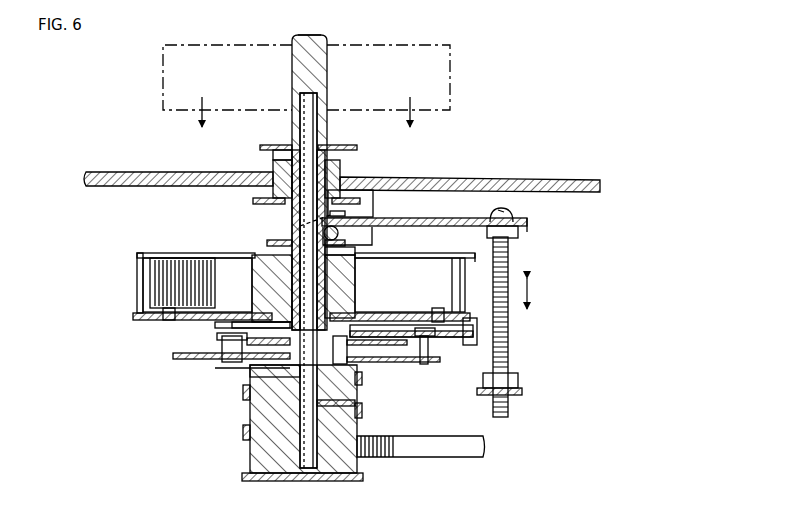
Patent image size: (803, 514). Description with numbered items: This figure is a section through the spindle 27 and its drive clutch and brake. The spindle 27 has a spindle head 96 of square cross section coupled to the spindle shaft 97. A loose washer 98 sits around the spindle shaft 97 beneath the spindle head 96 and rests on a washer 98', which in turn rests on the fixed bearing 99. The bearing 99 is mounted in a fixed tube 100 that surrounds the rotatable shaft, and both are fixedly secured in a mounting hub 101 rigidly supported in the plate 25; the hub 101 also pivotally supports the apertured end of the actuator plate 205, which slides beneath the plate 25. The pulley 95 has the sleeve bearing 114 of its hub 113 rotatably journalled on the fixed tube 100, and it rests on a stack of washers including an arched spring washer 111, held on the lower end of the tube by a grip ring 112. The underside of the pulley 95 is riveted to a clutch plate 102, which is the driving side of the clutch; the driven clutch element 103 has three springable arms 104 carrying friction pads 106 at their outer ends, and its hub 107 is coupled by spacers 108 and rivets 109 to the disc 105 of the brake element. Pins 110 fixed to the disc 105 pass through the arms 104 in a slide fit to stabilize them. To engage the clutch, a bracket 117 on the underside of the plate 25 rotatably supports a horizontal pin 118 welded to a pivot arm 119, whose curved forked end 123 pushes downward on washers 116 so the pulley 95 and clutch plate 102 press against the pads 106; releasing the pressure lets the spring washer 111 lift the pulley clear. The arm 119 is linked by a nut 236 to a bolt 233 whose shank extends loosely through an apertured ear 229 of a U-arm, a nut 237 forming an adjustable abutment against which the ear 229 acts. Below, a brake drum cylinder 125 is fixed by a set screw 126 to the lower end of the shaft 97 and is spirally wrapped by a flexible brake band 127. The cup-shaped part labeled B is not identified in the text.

The spindle 27 is at (314, 35).
The spindle head 96 is at (297, 73).
The spindle shaft 97 is at (322, 137).
The loose washer 98 is at (355, 154).
The washer 98' is at (272, 134).
The fixed bearing 99 is at (289, 151).
The mounting hub 101 is at (283, 181).
The plate 25 is at (470, 178).
The actuator plate 205 is at (252, 205).
The bracket 117 is at (362, 195).
The fixed tube 100 is at (297, 221).
The downwardly curved end portion 123 is at (296, 232).
The washers 116 is at (280, 239).
The pivot arm 119 is at (453, 221).
The horizontal pin 118 is at (338, 232).
The sleeve bearing 114 is at (355, 255).
The hub 113 is at (256, 282).
The brush assembly B is at (150, 280).
The clutch plate 102 is at (150, 320).
The rivets 109 is at (238, 326).
The pulley 95 is at (418, 285).
The spring washer 111 is at (355, 318).
The friction pads 106 is at (205, 321).
The springable arms 104 is at (230, 346).
The hub 107 is at (250, 356).
The spacers 108 is at (215, 358).
The pins 110 is at (215, 368).
The clutch element 103 is at (370, 344).
The disc 105 is at (405, 362).
The grip ring 112 is at (287, 360).
The brake drum cylinder 125 is at (262, 410).
The set screw 126 is at (358, 405).
The flexible brake band 127 is at (242, 393).
The bolt 233 is at (510, 338).
The nut 236 is at (520, 229).
The nut 237 is at (520, 384).
The apertured ear 229 is at (488, 392).